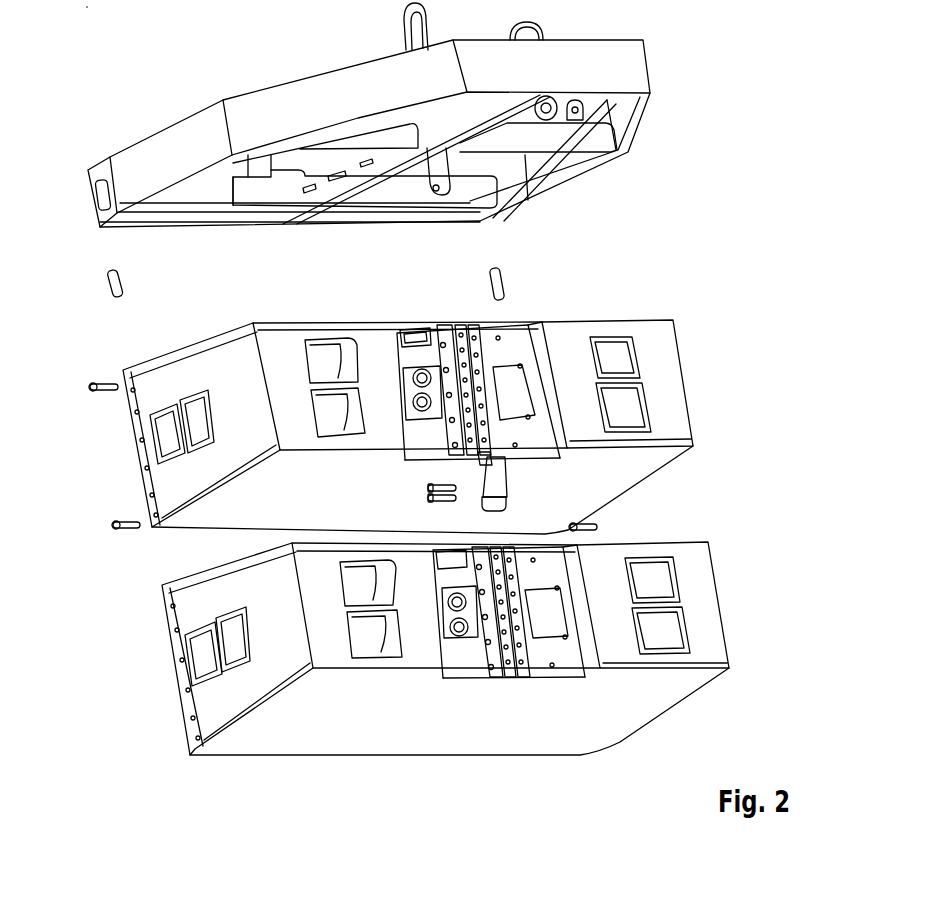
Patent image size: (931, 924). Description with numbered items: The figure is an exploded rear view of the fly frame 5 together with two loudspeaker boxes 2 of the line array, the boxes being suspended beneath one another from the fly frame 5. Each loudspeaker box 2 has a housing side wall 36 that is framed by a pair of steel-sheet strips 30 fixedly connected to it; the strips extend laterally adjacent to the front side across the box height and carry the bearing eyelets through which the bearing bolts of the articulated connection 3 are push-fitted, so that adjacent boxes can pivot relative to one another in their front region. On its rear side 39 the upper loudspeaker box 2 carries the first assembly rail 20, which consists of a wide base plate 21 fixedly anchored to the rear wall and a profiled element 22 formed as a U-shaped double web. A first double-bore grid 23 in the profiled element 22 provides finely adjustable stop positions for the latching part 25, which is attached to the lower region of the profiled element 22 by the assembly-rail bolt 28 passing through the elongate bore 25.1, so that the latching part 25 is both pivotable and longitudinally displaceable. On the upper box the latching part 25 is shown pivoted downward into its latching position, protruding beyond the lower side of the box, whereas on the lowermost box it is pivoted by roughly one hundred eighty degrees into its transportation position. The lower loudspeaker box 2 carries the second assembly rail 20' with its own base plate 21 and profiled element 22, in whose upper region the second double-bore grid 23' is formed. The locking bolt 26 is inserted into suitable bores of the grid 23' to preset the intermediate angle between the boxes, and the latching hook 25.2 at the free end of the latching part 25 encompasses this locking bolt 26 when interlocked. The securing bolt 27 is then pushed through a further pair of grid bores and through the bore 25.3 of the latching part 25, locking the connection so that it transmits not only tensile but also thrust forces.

The fly frame 5 is at (643, 59).
The loudspeaker box 2 is at (673, 367).
The articulated connection 3 is at (143, 533).
The first assembly rail 20 is at (439, 353).
The second assembly rail 20' is at (496, 647).
The base plate 21 is at (437, 338).
The profiled element 22 is at (483, 340).
The first double-bore grid 23 is at (434, 501).
The second double-bore grid 23' is at (412, 453).
The latching part 25 is at (450, 197).
The elongate bore 25.1 is at (480, 467).
The latching hook 25.2 is at (487, 497).
The bore 25.3 is at (503, 497).
The locking bolt 26 is at (407, 330).
The securing bolt 27 is at (397, 336).
The assembly-rail bolt 28 is at (523, 440).
The steel-sheet strip 30 is at (138, 433).
The housing side wall 36 is at (207, 357).
The rear side 39 is at (517, 333).